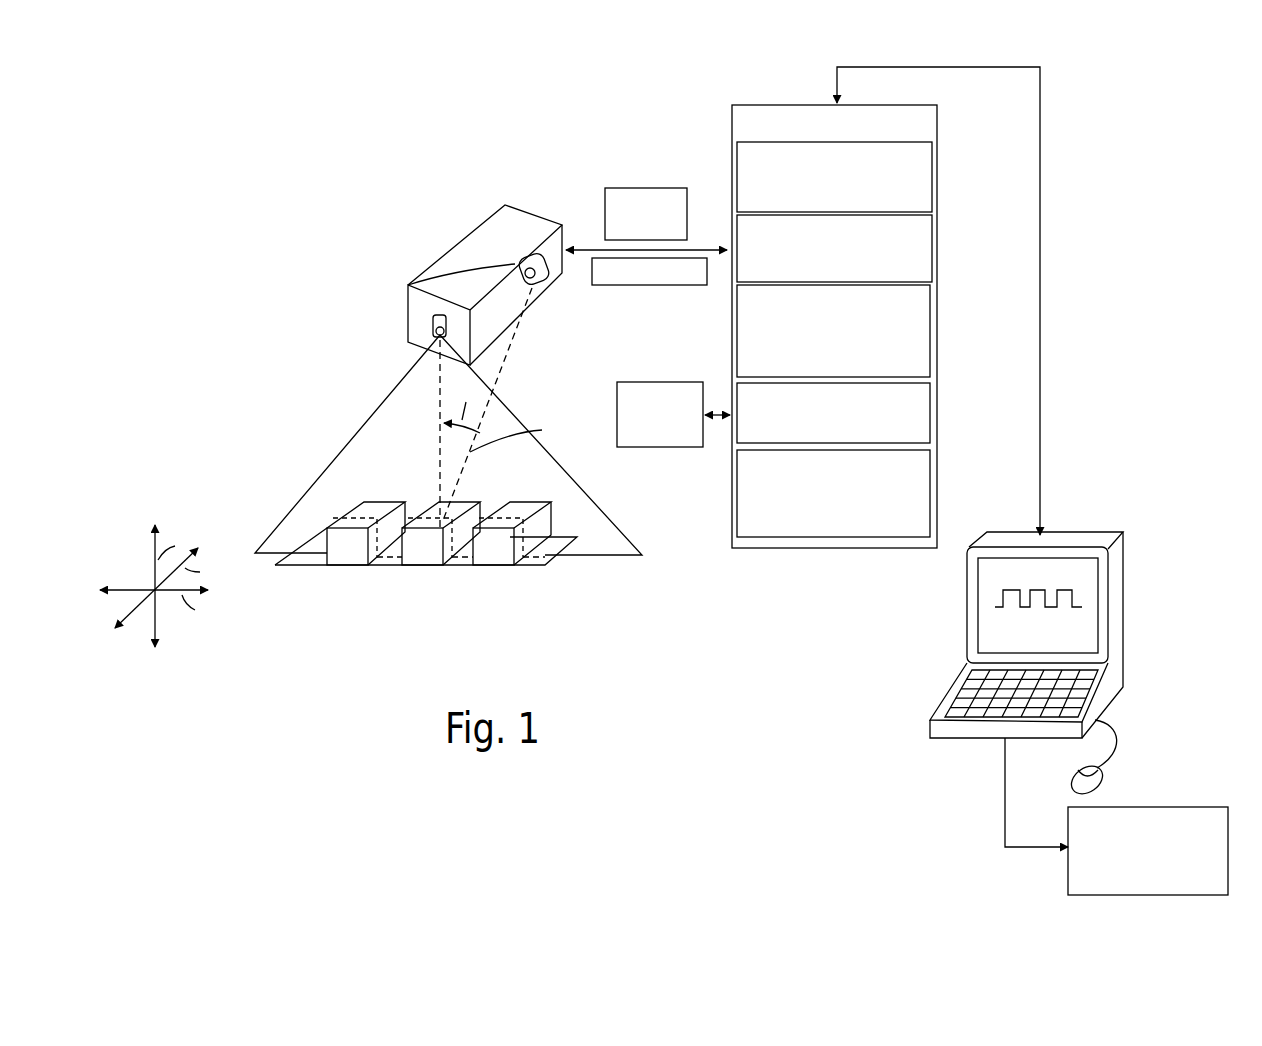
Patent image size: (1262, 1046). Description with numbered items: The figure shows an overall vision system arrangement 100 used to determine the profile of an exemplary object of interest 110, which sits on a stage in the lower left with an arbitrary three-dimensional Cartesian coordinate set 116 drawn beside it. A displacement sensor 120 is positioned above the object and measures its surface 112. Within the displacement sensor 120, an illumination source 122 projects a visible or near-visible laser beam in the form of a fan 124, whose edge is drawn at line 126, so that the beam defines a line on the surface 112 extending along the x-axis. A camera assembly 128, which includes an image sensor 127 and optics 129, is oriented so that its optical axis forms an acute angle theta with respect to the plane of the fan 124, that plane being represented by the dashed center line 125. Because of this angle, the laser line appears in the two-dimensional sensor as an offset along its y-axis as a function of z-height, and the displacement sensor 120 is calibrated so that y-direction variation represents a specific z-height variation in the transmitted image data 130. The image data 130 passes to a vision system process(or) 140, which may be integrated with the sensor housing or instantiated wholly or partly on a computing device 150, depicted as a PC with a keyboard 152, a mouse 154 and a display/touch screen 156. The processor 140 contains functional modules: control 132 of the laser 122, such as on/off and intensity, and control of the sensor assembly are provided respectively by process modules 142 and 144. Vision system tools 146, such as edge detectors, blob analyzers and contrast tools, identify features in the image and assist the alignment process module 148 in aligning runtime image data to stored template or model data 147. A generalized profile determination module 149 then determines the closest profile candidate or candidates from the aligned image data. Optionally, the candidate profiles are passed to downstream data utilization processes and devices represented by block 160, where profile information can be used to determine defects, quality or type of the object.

The vision system arrangement 100 is at (612, 100).
The object of interest 110 is at (340, 568).
The surface 112 is at (357, 507).
The 3D coordinate set 116 is at (160, 600).
The displacement sensor 120 is at (475, 228).
The illumination source 122 is at (432, 320).
The fan 124 is at (282, 517).
The dashed center line 125 is at (437, 442).
The laser fan edge 126 is at (619, 558).
The image sensor 127 is at (540, 255).
The camera assembly 128 is at (513, 263).
The optics 129 is at (527, 282).
The image data 130 is at (653, 187).
The control 132 is at (660, 286).
The vision system process(or) 140 is at (938, 125).
The laser control process module 142 is at (922, 178).
The sensor control process module 144 is at (927, 252).
The vision system tools 146 is at (928, 345).
The model data 147 is at (660, 450).
The alignment process module 148 is at (928, 415).
The profile determination module 149 is at (928, 482).
The computing device 150 is at (1092, 527).
The keyboard 152 is at (957, 700).
The mouse 154 is at (1103, 773).
The display/touch screen 156 is at (1090, 620).
The downstream utilization processes block 160 is at (1167, 806).